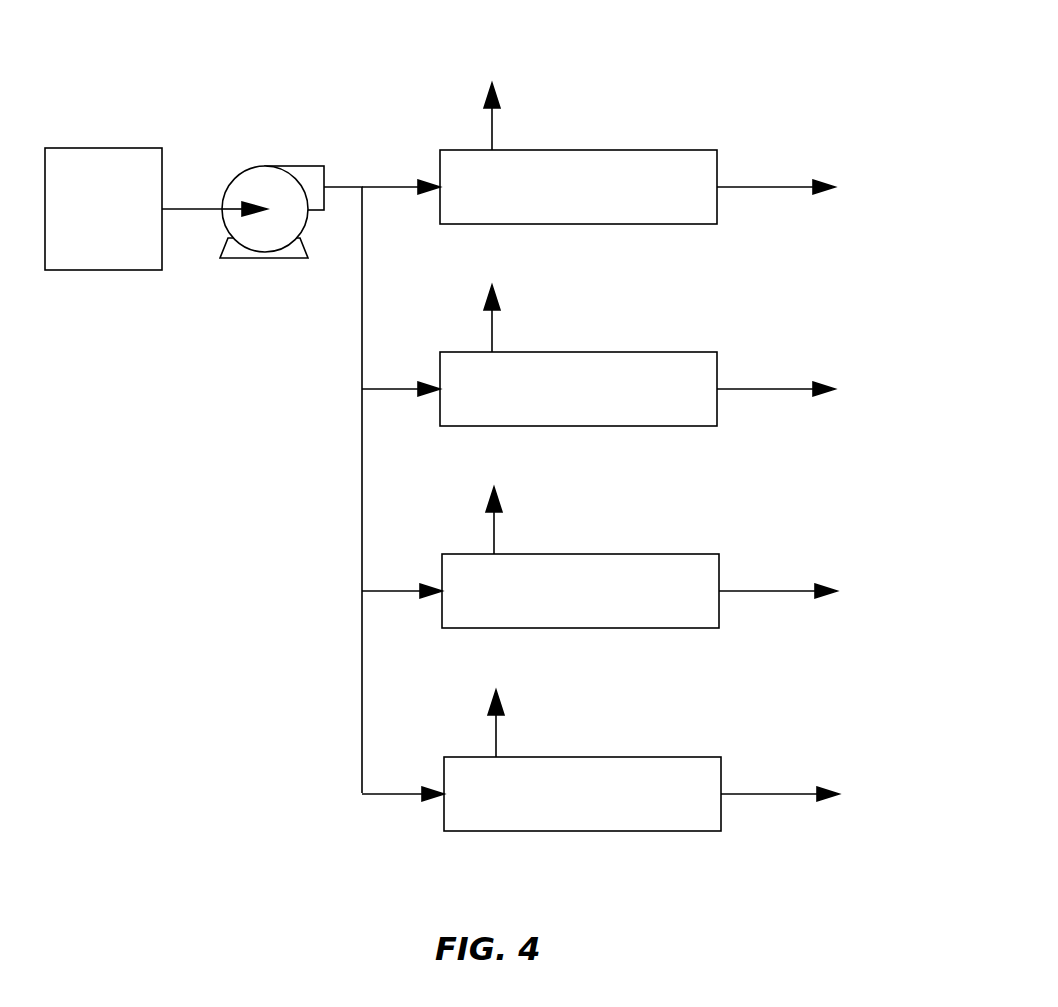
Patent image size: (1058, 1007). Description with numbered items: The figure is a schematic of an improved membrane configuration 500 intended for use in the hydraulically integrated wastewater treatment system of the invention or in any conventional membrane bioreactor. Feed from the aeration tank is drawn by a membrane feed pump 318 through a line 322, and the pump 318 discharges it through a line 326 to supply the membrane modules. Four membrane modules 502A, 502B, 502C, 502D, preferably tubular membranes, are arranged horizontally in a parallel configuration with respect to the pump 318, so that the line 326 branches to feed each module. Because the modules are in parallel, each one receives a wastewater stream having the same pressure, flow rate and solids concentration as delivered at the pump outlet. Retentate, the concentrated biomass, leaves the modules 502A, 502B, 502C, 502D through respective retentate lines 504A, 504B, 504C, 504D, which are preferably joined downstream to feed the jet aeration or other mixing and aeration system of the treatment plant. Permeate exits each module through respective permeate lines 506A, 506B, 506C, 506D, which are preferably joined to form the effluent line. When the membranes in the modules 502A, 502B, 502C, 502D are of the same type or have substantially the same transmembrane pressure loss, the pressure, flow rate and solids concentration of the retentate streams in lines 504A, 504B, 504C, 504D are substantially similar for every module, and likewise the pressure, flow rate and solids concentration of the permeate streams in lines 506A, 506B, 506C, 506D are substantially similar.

The membrane configuration 500 is at (830, 66).
The pump 318 is at (243, 228).
The line 322 is at (189, 207).
The line 326 is at (347, 187).
The membrane module 502A is at (602, 224).
The membrane module 502B is at (539, 392).
The membrane module 502C is at (540, 594).
The membrane module 502D is at (541, 797).
The retentate line 504A is at (752, 188).
The retentate line 504B is at (783, 396).
The retentate line 504C is at (785, 598).
The retentate line 504D is at (787, 801).
The permeate line 506A is at (493, 123).
The permeate line 506B is at (539, 316).
The permeate line 506C is at (541, 518).
The permeate line 506D is at (544, 721).